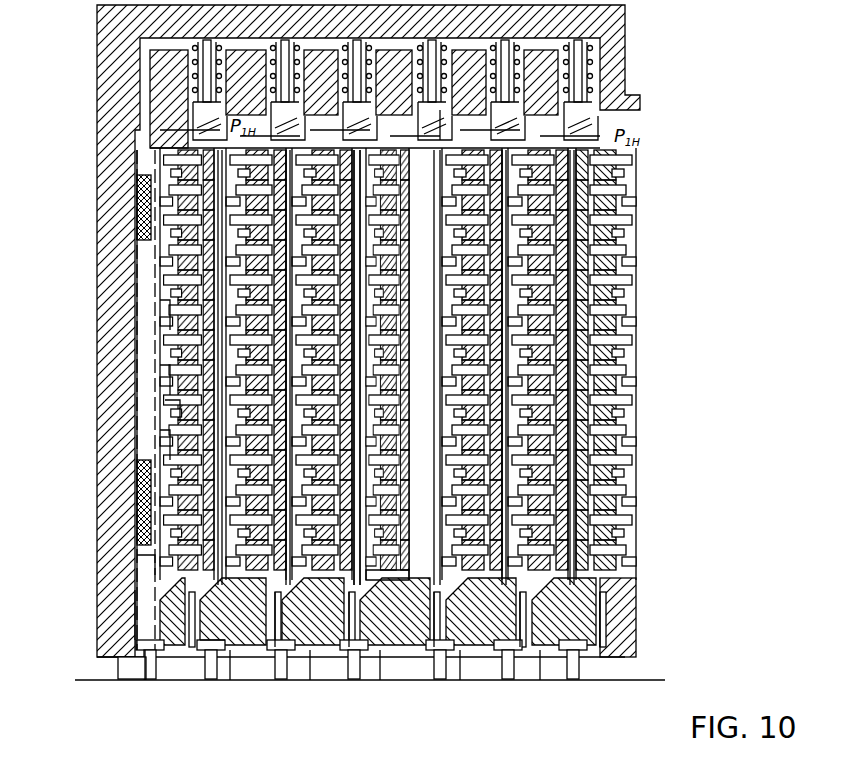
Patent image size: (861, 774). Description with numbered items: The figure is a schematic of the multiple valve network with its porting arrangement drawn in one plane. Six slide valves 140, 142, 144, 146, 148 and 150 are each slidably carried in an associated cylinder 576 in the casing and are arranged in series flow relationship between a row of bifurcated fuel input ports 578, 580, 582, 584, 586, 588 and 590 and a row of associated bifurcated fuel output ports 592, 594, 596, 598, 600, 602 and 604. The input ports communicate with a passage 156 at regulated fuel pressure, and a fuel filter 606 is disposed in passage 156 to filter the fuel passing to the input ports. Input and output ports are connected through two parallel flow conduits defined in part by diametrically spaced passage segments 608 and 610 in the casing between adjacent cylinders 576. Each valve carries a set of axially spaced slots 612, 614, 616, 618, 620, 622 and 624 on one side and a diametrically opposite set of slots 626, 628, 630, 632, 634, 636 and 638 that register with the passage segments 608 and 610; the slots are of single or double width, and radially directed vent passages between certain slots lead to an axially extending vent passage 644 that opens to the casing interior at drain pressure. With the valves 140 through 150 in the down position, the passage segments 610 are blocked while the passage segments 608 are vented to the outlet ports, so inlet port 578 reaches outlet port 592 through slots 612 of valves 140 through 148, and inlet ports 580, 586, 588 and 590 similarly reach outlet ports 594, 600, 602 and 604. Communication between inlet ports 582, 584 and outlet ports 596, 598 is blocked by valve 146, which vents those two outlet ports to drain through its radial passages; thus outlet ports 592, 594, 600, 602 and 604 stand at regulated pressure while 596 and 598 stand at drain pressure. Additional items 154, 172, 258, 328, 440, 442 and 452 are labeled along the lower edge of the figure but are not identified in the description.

The valve 140 is at (162, 675).
The valve 142 is at (237, 675).
The valve 144 is at (322, 675).
The valve 146 is at (396, 675).
The valve 148 is at (542, 675).
The valve 150 is at (605, 612).
The port 154 is at (470, 675).
The passage 156 is at (140, 675).
The passage 172 is at (210, 675).
The passage 258 is at (354, 675).
The passage 328 is at (280, 675).
The passage 440 is at (436, 675).
The passage 442 is at (506, 675).
The passage 452 is at (576, 675).
The cylinder 576 is at (176, 410).
The bifurcated fuel input port 578 is at (148, 568).
The bifurcated fuel input port 580 is at (150, 500).
The bifurcated fuel input port 582 is at (166, 445).
The bifurcated fuel input port 584 is at (166, 380).
The bifurcated fuel input port 586 is at (166, 315).
The bifurcated fuel input port 588 is at (160, 240).
The bifurcated fuel input port 590 is at (140, 180).
The bifurcated fuel output port 592 is at (626, 556).
The bifurcated fuel output port 594 is at (630, 500).
The bifurcated fuel output port 596 is at (630, 448).
The bifurcated fuel output port 598 is at (630, 396).
The bifurcated fuel output port 600 is at (618, 330).
The bifurcated fuel output port 602 is at (616, 265).
The bifurcated fuel output port 604 is at (612, 198).
The fuel filter 606 is at (134, 605).
The passage segment 608 is at (395, 578).
The passage segment 610 is at (380, 525).
The slot 612 is at (400, 558).
The slot 614 is at (400, 500).
The slot 616 is at (400, 448).
The slot 618 is at (400, 388).
The slot 620 is at (400, 322).
The slot 622 is at (400, 254).
The slot 624 is at (400, 190).
The slot 626 is at (400, 530).
The slot 628 is at (400, 472).
The slot 630 is at (400, 420).
The slot 632 is at (400, 356).
The slot 634 is at (400, 290).
The slot 636 is at (400, 222).
The slot 638 is at (398, 160).
The vent passage 644 is at (622, 230).